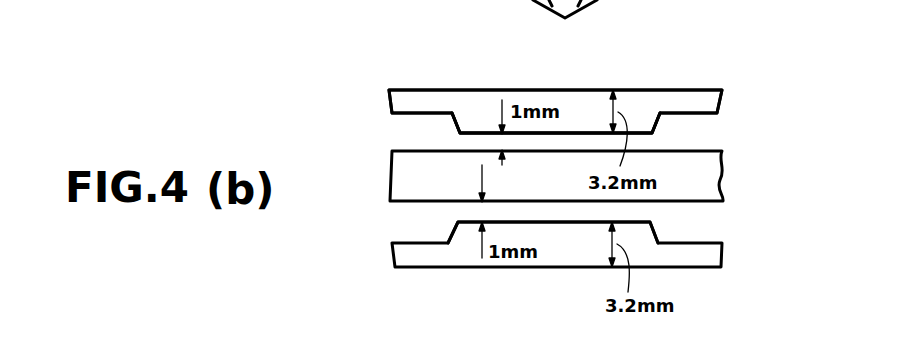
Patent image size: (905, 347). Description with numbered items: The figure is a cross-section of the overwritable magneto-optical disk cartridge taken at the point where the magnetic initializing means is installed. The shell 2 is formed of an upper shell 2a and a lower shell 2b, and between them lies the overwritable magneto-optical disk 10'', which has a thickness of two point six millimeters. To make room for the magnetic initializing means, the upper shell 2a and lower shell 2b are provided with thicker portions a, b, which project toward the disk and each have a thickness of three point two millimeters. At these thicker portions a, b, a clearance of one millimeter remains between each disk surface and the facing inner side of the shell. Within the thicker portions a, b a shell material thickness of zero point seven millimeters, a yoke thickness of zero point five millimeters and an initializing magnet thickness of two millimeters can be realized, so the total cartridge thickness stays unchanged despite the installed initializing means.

The shell 2 is at (683, 90).
The upper shell 2a is at (430, 95).
The lower shell 2b is at (430, 268).
The thicker portion a is at (591, 113).
The thicker portion b is at (568, 267).
The overwritable magneto-optical disk 10'' is at (600, 164).